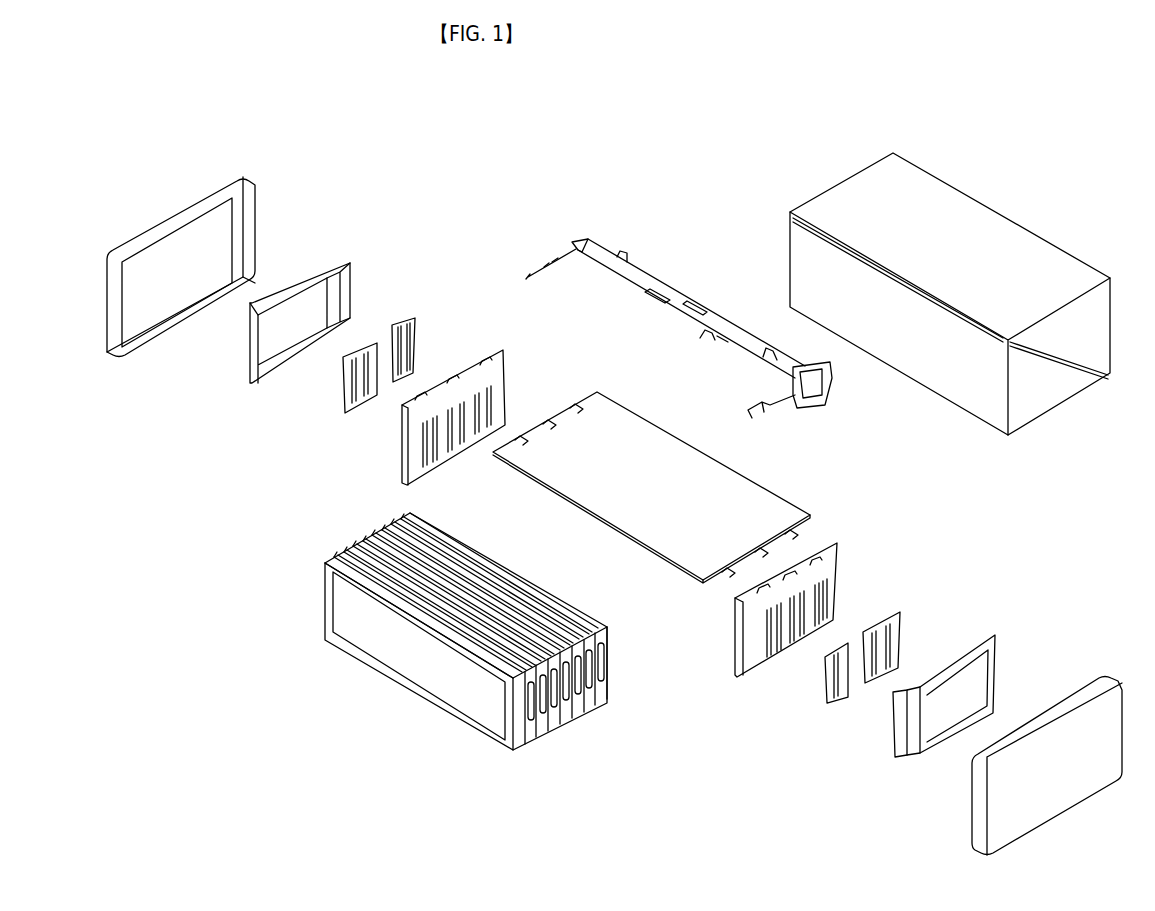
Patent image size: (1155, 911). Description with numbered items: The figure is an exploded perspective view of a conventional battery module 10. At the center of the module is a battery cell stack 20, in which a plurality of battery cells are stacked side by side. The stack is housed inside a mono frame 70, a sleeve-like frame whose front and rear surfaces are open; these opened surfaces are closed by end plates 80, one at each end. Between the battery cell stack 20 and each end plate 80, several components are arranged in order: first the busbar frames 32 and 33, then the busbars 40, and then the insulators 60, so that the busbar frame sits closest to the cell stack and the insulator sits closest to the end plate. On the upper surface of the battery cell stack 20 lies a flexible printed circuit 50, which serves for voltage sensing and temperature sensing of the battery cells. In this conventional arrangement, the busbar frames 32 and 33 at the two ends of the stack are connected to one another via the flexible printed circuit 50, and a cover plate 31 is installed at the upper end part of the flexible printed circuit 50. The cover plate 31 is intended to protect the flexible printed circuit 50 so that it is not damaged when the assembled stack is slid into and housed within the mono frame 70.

The battery module 10 is at (455, 150).
The battery cell stack 20 is at (413, 710).
The cover plate 31 is at (767, 502).
The busbar frame 32 is at (733, 663).
The busbar frame 33 is at (402, 443).
The busbar 40 is at (408, 325).
The flexible printed circuit 50 is at (650, 282).
The insulator 60 is at (252, 357).
The mono frame 70 is at (1053, 240).
The end plate 80 is at (112, 312).